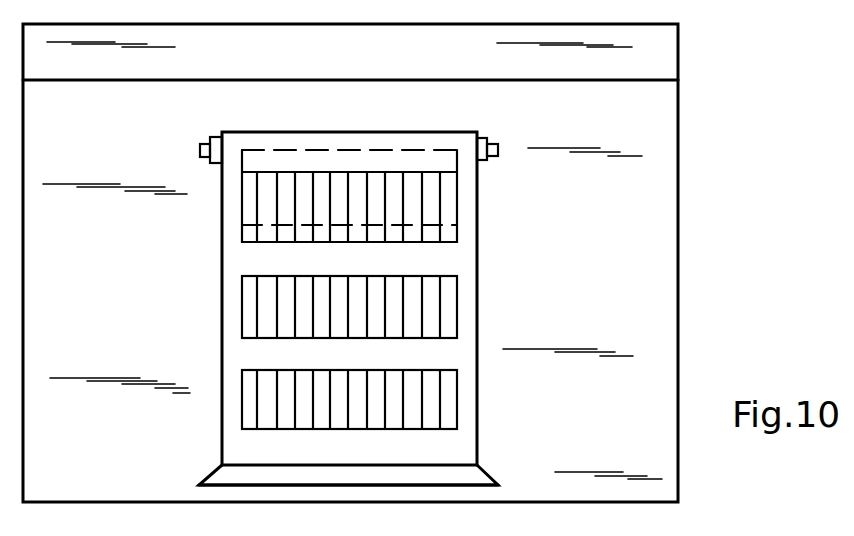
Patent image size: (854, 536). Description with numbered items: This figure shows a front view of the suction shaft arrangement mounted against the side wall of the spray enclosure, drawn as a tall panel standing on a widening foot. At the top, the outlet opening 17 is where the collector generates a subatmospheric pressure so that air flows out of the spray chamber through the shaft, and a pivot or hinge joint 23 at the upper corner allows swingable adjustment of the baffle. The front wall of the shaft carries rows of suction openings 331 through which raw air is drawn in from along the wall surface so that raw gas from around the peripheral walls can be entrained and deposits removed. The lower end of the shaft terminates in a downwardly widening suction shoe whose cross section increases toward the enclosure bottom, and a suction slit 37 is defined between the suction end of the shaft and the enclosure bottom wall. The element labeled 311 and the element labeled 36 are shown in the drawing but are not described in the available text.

The outlet opening 17 is at (352, 152).
The pivot or hinge joint 23 is at (487, 138).
The upper lattice panel 311 is at (443, 258).
The suction openings 331 is at (407, 310).
The base 36 is at (477, 473).
The suction slit 37 is at (212, 492).